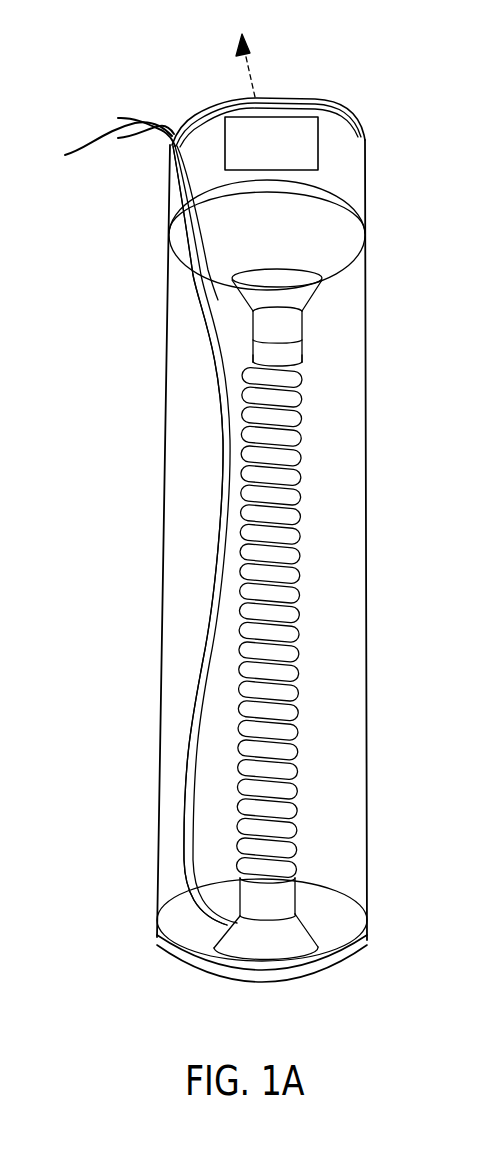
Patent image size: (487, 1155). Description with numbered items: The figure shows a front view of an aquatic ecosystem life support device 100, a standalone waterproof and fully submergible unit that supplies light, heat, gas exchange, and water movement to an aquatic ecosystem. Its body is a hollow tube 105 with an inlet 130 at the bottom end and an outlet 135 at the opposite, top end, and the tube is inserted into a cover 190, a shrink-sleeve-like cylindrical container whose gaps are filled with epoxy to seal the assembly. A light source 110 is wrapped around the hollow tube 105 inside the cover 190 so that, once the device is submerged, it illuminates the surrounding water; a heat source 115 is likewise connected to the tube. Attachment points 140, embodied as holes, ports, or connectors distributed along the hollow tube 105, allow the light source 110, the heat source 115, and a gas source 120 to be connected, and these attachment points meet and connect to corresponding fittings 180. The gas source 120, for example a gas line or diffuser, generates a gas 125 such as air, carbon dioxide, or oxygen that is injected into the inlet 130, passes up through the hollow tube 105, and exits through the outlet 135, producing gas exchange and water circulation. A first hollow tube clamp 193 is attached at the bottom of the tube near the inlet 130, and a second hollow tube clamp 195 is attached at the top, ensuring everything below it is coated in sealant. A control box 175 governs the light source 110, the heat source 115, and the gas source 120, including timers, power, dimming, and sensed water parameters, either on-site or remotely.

The aquatic ecosystem life support device 100 is at (160, 82).
The hollow tube 105 is at (283, 782).
The light source 110 is at (248, 545).
The heat source 115 is at (161, 535).
The gas source 120 is at (200, 1025).
The gas 125 is at (257, 78).
The inlet 130 is at (338, 937).
The outlet 135 is at (323, 220).
The attachment points 140 is at (168, 142).
The control box 175 is at (271, 143).
The fittings 180 is at (275, 285).
The cover 190 is at (165, 485).
The first hollow tube clamp 193 is at (255, 897).
The second hollow tube clamp 195 is at (257, 350).